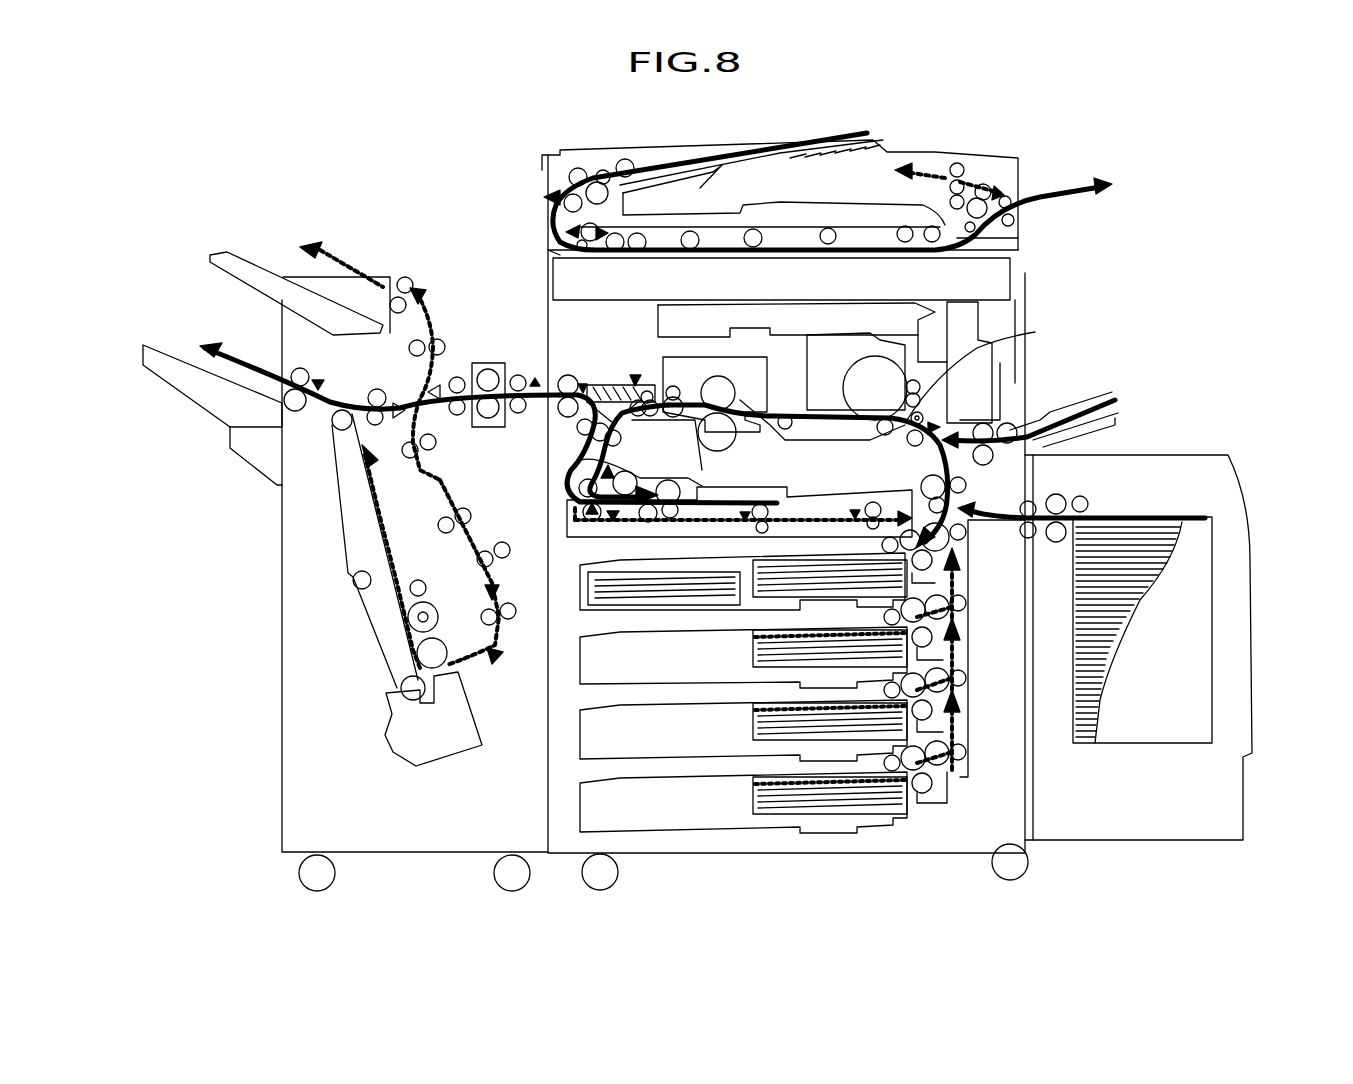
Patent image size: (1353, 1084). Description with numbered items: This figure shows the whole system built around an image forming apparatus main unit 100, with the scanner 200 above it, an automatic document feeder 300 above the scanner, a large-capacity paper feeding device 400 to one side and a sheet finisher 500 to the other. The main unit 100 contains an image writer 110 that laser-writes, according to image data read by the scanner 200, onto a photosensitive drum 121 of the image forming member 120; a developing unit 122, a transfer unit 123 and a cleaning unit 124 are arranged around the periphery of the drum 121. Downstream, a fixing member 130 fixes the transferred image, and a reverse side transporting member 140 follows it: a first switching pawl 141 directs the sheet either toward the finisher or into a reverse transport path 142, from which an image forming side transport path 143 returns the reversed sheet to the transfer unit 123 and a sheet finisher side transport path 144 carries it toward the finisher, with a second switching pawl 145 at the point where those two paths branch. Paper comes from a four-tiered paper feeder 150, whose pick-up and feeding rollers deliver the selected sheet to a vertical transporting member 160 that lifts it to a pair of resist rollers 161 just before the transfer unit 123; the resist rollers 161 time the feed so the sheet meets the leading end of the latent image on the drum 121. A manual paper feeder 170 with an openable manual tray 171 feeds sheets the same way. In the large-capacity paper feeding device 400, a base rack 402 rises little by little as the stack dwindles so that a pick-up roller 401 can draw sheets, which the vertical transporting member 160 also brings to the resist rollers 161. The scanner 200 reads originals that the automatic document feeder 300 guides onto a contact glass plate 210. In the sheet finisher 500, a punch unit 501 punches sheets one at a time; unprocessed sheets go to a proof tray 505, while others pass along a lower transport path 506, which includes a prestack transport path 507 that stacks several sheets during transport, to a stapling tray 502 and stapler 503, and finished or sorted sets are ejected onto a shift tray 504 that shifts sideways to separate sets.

The image forming apparatus main unit 100 is at (1040, 299).
The image writer 110 is at (660, 313).
The image forming member 120 is at (1000, 363).
The photosensitive drum 121 is at (900, 400).
The developing unit 122 is at (1023, 377).
The transfer unit 123 is at (862, 438).
The cleaning unit 124 is at (856, 366).
The fixing member 130 is at (660, 360).
The reverse side transporting member 140 is at (808, 473).
The first switching pawl 141 is at (572, 380).
The reverse transport path 142 is at (695, 486).
The image forming side transport path 143 is at (690, 530).
The sheet finisher side transport path 144 is at (570, 470).
The second switching pawl 145 is at (548, 362).
The paper feeder 150 is at (563, 820).
The vertical transporting member 160 is at (977, 730).
The resist rollers 161 is at (1003, 362).
The manual paper feeder 170 is at (1078, 400).
The manual tray 171 is at (1120, 412).
The scanner 200 is at (1000, 271).
The contact glass plate 210 is at (562, 257).
The automatic document feeder 300 is at (975, 135).
The large-capacity paper feeding device 400 is at (1232, 460).
The pick-up roller 401 is at (1080, 500).
The base rack 402 is at (1168, 744).
The sheet finisher 500 is at (283, 632).
The punch unit 501 is at (488, 428).
The stapling tray 502 is at (363, 543).
The stapler 503 is at (402, 750).
The shift tray 504 is at (185, 380).
The proof tray 505 is at (258, 262).
The lower transport path 506 is at (480, 662).
The prestack transport path 507 is at (468, 543).